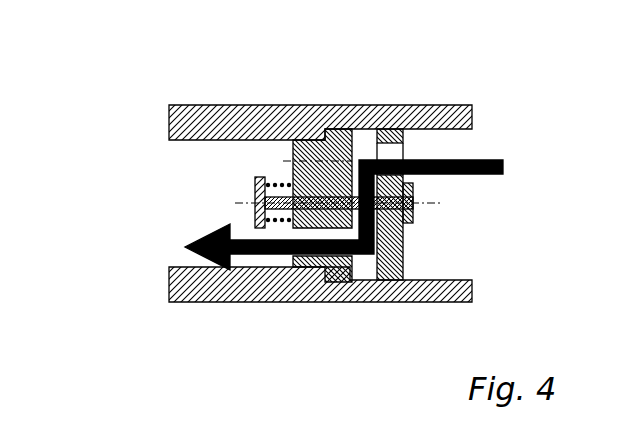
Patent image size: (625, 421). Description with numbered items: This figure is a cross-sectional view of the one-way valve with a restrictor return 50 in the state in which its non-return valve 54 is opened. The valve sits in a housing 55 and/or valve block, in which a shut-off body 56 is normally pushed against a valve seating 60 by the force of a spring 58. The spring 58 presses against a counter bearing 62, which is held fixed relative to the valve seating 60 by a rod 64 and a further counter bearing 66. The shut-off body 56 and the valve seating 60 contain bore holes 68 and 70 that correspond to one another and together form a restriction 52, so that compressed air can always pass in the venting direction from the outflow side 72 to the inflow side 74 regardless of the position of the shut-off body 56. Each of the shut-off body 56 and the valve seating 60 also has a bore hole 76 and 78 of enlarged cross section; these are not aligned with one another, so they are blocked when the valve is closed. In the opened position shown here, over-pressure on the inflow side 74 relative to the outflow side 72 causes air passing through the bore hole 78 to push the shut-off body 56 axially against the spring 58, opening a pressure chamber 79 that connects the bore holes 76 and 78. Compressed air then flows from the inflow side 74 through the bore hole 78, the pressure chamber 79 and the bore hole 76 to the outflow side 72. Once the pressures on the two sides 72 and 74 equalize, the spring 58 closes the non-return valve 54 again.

The one-way valve with a restrictor return 50 is at (432, 83).
The restriction 52 is at (312, 95).
The non-return valve 54 is at (263, 83).
The housing 55 is at (168, 120).
The shut-off body 56 is at (338, 105).
The spring 58 is at (258, 290).
The valve seating 60 is at (403, 258).
The counter bearing 62 is at (254, 183).
The rod 64 is at (293, 161).
The counter bearing 66 is at (413, 220).
The bore hole 68 is at (238, 104).
The bore hole 70 is at (403, 158).
The outflow side 72 is at (183, 227).
The inflow side 74 is at (474, 209).
The bore hole 76 is at (348, 282).
The bore hole 78 is at (385, 149).
The pressure chamber 79 is at (369, 137).